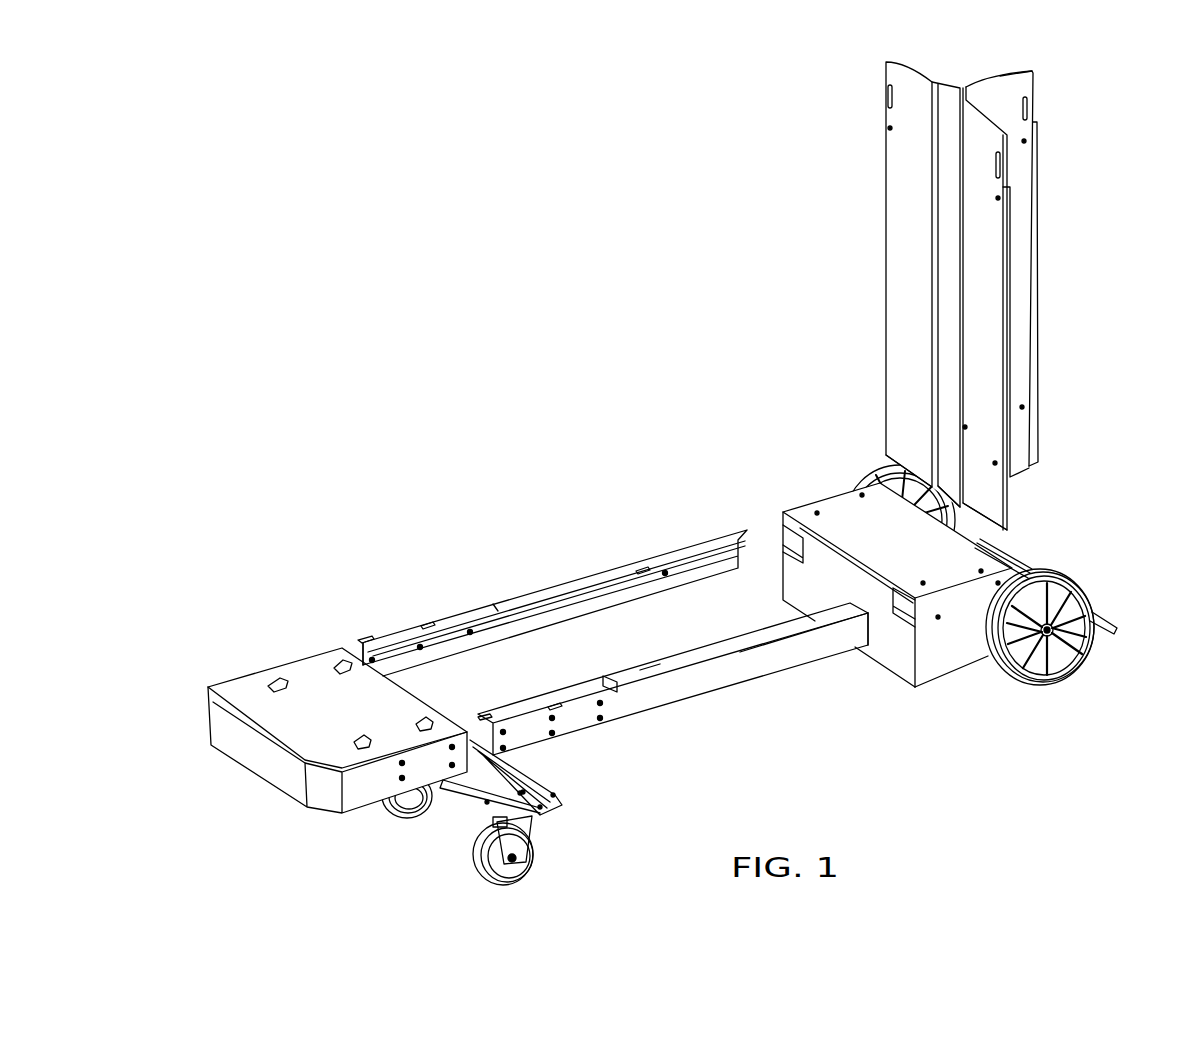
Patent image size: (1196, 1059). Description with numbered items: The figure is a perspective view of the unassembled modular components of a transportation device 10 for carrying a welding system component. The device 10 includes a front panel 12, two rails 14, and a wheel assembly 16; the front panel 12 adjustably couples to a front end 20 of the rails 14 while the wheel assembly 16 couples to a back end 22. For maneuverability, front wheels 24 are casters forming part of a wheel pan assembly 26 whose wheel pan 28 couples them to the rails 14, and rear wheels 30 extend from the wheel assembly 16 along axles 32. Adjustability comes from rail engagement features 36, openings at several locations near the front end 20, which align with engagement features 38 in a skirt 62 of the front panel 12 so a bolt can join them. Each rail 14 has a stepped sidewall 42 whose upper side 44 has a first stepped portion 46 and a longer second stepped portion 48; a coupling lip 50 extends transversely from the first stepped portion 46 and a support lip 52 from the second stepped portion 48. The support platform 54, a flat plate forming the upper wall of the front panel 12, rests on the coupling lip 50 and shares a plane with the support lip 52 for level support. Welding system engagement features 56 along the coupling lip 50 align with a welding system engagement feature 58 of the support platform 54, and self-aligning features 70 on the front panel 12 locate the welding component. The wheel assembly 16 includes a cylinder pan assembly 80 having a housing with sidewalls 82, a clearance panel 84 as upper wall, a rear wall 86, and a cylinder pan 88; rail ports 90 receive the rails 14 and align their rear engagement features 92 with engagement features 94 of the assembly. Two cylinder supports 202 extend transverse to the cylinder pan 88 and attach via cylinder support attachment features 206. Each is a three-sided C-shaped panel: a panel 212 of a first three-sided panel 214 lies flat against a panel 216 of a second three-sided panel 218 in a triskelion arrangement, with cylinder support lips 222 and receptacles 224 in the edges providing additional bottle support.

The transportation device 10 is at (416, 281).
The front panel 12 is at (240, 651).
The rails 14 is at (682, 624).
The wheel assembly 16 is at (815, 476).
The front end 20 is at (474, 687).
The back end 22 is at (771, 616).
The front wheels 24 is at (537, 871).
The wheel pan assembly 26 is at (541, 827).
The wheel pan 28 is at (470, 808).
The rear wheels 30 is at (1057, 684).
The axle 32 is at (1077, 660).
The rail engagement features 36 is at (519, 761).
The engagement features of the front panel 38 is at (444, 774).
The stepped sidewall 42 is at (362, 641).
The upper side 44 is at (618, 681).
The first stepped portion 46 is at (473, 610).
The second stepped portion 48 is at (665, 675).
The coupling lip 50 is at (393, 633).
The support lip 52 is at (548, 585).
The support platform 54 is at (230, 690).
The welding system engagement features 56 is at (640, 571).
The welding system engagement feature 58 is at (290, 680).
The skirt 62 is at (258, 779).
The self-aligning features 70 is at (426, 727).
The cylinder pan assembly 80 is at (842, 479).
The sidewalls 82 is at (933, 676).
The clearance panel 84 is at (795, 505).
The rear wall 86 is at (858, 583).
The cylinder pan 88 is at (1112, 620).
The rail ports 90 is at (785, 533).
The rear engagement features 92 is at (782, 628).
The engagement features of the cylinder pan assembly 94 is at (923, 583).
The cylinder support 202 is at (869, 84).
The cylinder support attachment features 206 is at (925, 398).
The panel 212 is at (984, 79).
The first three-sided panel 214 is at (933, 75).
The panel 216 is at (1020, 84).
The second three-sided panel 218 is at (1054, 114).
The cylinder support lips 222 is at (1010, 313).
The receptacles 224 is at (891, 86).